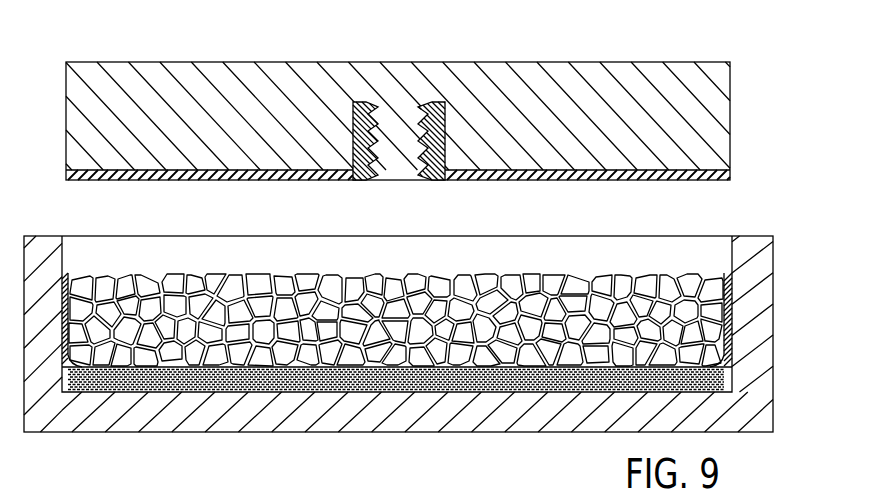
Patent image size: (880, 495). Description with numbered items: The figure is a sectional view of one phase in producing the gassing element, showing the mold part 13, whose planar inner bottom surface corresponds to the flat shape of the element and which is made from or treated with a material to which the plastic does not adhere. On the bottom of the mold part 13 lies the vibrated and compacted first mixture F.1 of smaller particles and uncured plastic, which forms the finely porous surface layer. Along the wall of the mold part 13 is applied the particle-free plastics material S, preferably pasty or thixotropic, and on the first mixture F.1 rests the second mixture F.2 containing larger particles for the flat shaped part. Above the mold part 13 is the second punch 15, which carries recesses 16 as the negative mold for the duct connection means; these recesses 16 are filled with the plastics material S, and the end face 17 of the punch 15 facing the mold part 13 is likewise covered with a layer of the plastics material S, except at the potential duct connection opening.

The mold part 13 is at (765, 272).
The second punch 15 is at (720, 114).
The recesses 16 is at (445, 117).
The end face 17 is at (698, 186).
The plastics material S is at (365, 101).
The first particle/plastics mixture F.1 is at (298, 386).
The second particle/plastics mixture F.2 is at (304, 290).